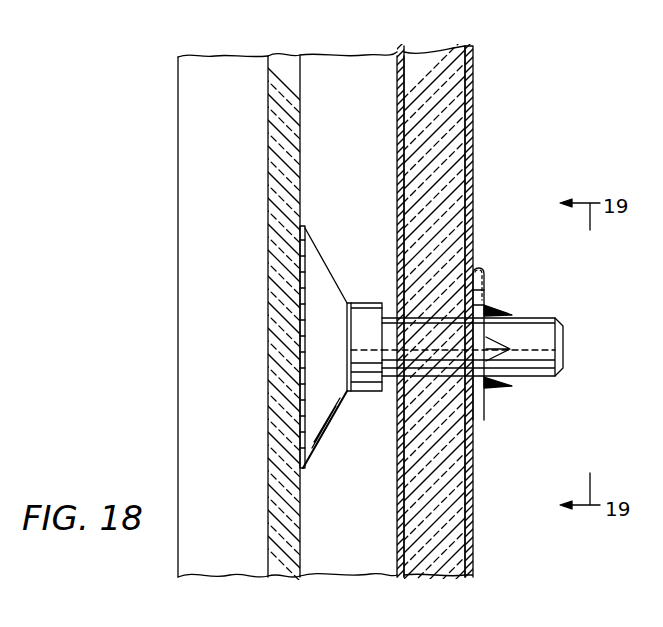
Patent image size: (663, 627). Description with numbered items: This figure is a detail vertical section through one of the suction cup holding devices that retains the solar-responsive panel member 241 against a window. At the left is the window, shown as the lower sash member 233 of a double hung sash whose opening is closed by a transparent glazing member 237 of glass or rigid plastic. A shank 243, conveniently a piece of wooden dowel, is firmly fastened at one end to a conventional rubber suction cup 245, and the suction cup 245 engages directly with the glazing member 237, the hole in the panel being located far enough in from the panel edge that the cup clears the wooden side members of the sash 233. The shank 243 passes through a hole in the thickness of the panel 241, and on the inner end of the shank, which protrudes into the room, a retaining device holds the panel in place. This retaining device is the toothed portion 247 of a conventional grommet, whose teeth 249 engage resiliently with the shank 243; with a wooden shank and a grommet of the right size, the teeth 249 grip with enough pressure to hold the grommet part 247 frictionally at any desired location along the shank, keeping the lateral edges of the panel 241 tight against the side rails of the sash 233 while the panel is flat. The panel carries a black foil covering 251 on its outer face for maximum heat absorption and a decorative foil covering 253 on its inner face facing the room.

The lower sash member 233 is at (178, 248).
The glazing member 237 is at (268, 325).
The panel member 241 is at (455, 56).
The shank 243 is at (553, 333).
The suction cup 245 is at (318, 268).
The toothed portion of grommet 247 is at (484, 283).
The teeth 249 is at (510, 349).
The foil covering 251 is at (397, 58).
The foil covering 253 is at (480, 80).